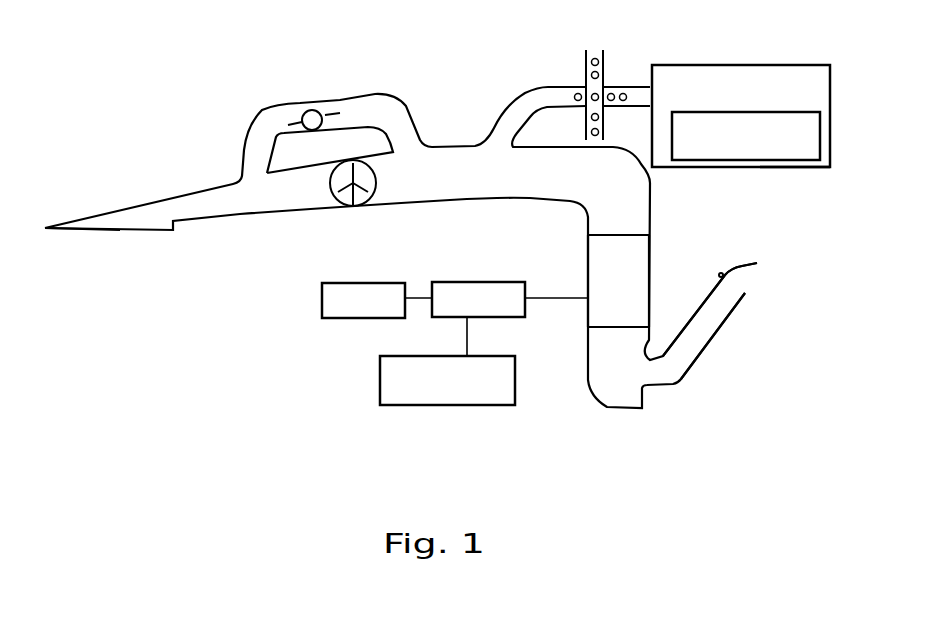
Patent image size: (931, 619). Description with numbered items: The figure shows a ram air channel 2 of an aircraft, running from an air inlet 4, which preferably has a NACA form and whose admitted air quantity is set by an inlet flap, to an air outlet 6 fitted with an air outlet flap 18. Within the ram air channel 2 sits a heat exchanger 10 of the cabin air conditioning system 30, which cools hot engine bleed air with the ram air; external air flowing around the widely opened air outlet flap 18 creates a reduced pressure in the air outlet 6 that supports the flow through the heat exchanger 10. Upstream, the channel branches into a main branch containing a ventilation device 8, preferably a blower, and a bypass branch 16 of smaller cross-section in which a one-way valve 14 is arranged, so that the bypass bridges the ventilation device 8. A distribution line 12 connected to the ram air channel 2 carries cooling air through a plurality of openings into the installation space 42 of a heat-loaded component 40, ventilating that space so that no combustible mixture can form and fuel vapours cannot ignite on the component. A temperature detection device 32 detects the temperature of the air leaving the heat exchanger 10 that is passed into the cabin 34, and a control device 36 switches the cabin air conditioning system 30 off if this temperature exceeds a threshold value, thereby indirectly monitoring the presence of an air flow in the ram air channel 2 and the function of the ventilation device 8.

The ram air channel 2 is at (450, 165).
The air inlet 4 is at (122, 230).
The air outlet 6 is at (695, 337).
The ventilation device 8 is at (353, 206).
The heat exchanger 10 is at (603, 293).
The distribution line 12 is at (597, 83).
The one-way valve 14 is at (320, 110).
The bypass branch 16 is at (270, 127).
The air outlet flap 18 is at (732, 271).
The cabin air conditioning system 30 is at (731, 48).
The temperature detection device 32 is at (478, 282).
The cabin 34 is at (352, 320).
The control device 36 is at (472, 407).
The heat-loaded component 40 is at (700, 161).
The installation space 42 is at (783, 170).